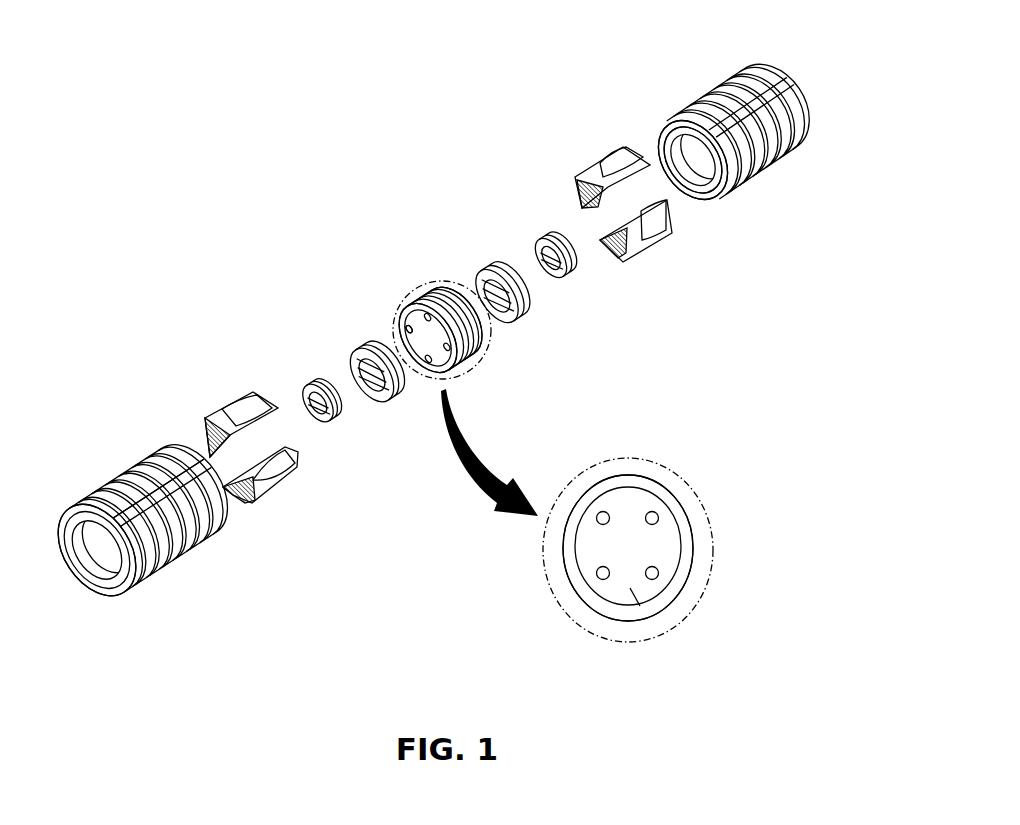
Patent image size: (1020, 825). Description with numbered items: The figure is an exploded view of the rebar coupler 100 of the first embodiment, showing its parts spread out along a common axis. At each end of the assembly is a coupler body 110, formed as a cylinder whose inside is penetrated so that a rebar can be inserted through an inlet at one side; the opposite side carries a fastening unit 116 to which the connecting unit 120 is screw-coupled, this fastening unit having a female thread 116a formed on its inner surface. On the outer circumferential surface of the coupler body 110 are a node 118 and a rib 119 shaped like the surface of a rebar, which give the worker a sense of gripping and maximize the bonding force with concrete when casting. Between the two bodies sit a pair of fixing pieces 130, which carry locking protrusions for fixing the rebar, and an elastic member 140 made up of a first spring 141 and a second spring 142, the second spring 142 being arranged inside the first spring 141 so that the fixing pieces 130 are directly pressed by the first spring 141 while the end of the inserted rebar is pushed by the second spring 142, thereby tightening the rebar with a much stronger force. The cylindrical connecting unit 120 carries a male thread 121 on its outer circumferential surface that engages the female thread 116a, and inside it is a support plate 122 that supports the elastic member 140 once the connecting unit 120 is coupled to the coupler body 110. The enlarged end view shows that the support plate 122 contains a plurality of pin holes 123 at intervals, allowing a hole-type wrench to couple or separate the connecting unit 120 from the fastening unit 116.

The rebar coupler 100 is at (390, 95).
The coupler body 110 is at (124, 466).
The fastening unit 116 is at (686, 196).
The female thread 116a is at (702, 207).
The node 118 is at (163, 560).
The rib 119 is at (205, 513).
The connecting unit 120 is at (406, 283).
The male thread 121 is at (480, 351).
The support plate 122 is at (445, 381).
The pin holes 123 is at (418, 332).
The fixing piece 130 is at (220, 392).
The elastic member 140 is at (330, 351).
The first spring 141 is at (378, 398).
The second spring 142 is at (328, 426).